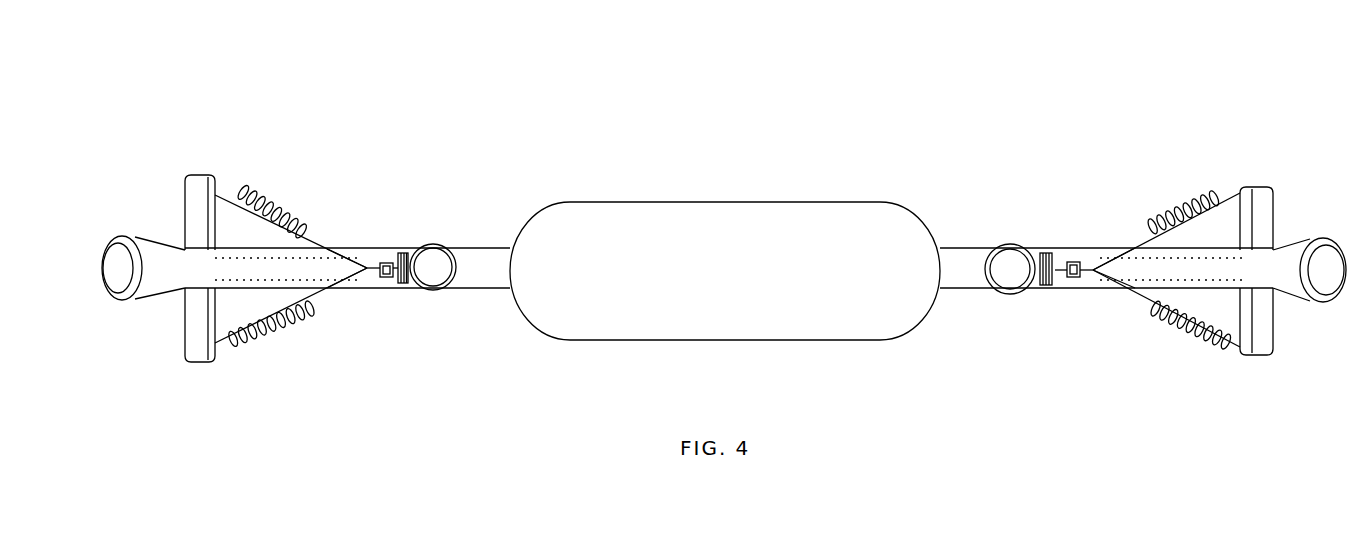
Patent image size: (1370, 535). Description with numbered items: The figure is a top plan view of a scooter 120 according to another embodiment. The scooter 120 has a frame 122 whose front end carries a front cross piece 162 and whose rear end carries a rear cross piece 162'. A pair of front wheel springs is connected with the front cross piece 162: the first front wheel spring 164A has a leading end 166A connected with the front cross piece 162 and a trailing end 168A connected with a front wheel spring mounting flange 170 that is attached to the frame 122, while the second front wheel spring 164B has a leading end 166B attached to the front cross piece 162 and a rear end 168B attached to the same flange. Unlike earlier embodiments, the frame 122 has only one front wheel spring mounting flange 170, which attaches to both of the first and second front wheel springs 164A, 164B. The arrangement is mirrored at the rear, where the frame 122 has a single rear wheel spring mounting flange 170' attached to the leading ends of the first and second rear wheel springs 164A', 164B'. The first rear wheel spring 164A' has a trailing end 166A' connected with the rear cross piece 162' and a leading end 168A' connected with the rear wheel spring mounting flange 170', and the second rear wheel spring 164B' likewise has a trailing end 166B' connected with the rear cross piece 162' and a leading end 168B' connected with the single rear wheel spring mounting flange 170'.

The scooter 120 is at (545, 187).
The frame 122 is at (957, 265).
The front cross piece 162 is at (1311, 207).
The rear cross piece 162' is at (133, 214).
The first front wheel spring 164A is at (1166, 175).
The first rear wheel spring 164A' is at (291, 175).
The second front wheel spring 164B is at (1166, 355).
The second rear wheel spring 164B' is at (291, 361).
The leading end 166A is at (1251, 152).
The trailing end 166A' is at (196, 147).
The leading end 166B is at (1240, 367).
The trailing end 166B' is at (210, 386).
The trailing end 168A is at (1102, 194).
The leading end 168A' is at (353, 202).
The rear end 168B is at (1093, 336).
The leading end 168B' is at (382, 335).
The front wheel spring mounting flange 170 is at (1049, 204).
The rear wheel spring mounting flange 170' is at (410, 232).